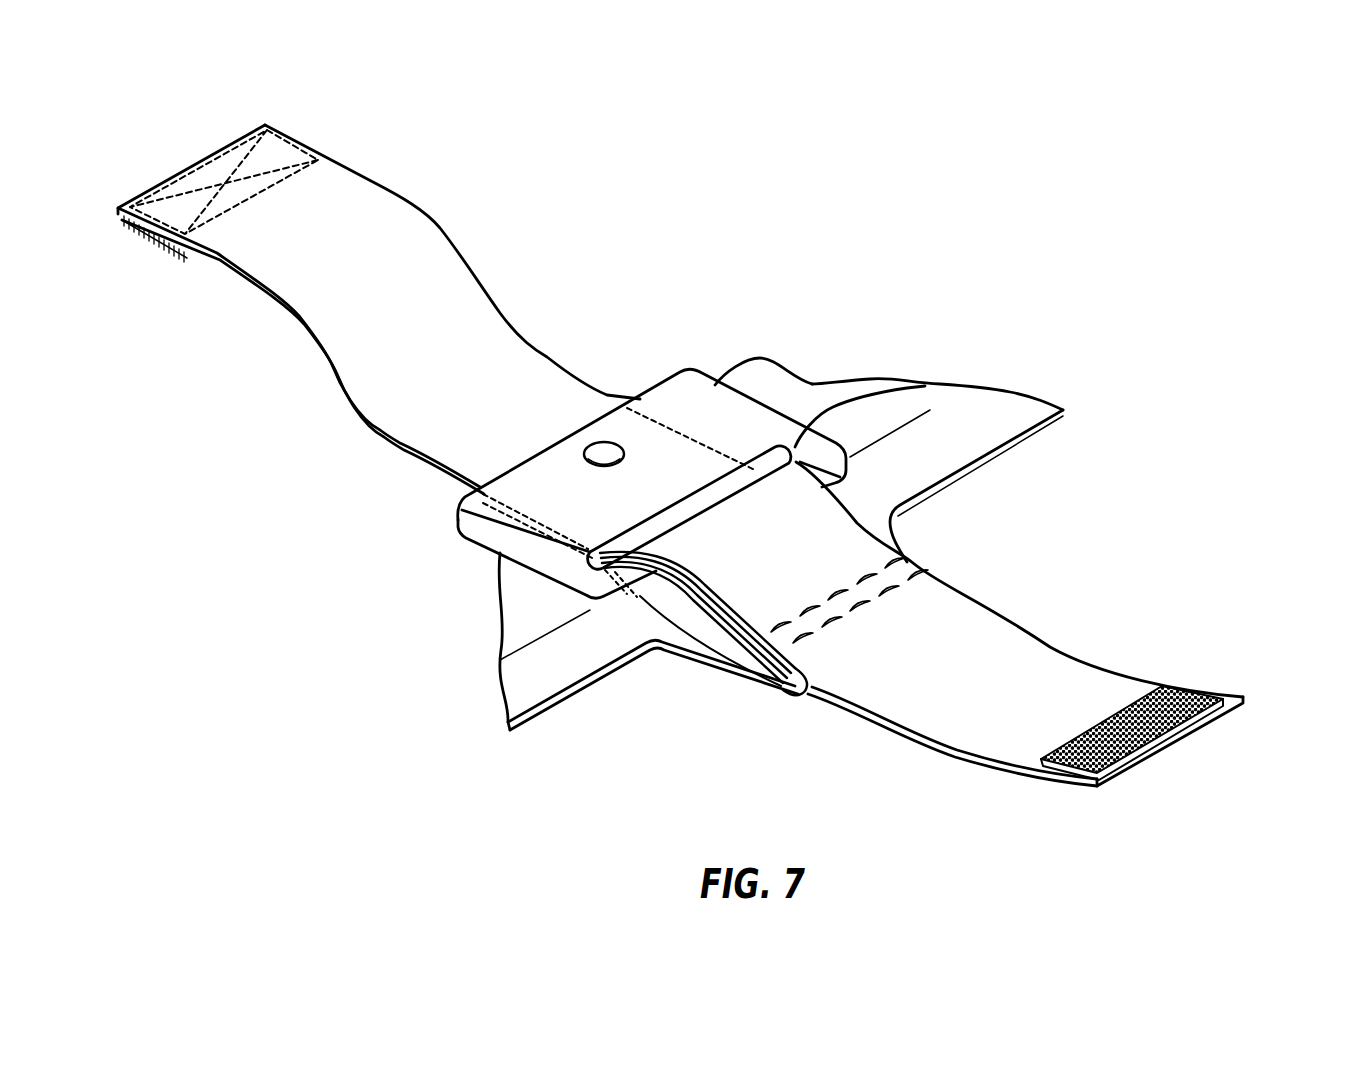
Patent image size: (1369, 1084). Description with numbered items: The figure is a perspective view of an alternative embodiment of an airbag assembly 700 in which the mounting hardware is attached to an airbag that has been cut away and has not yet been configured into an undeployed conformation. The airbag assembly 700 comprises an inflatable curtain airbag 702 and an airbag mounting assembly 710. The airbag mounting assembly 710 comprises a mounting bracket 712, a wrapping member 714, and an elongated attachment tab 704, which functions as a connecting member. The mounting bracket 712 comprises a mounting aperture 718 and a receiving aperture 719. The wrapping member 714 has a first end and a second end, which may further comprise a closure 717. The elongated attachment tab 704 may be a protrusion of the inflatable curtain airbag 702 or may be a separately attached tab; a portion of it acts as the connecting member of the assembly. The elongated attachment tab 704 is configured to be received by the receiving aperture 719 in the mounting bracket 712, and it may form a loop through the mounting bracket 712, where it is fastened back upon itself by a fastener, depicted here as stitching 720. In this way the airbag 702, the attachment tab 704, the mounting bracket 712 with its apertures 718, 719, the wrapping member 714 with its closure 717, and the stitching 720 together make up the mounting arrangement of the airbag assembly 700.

The airbag assembly 700 is at (983, 307).
The inflatable curtain airbag 702 is at (505, 618).
The elongated attachment tab 704 is at (763, 650).
The airbag mounting assembly 710 is at (774, 386).
The mounting bracket 712 is at (692, 388).
The wrapping member 714 is at (363, 207).
The closure 717 is at (150, 240).
The mounting aperture 718 is at (588, 447).
The receiving aperture 719 is at (927, 388).
The stitching 720 is at (900, 543).